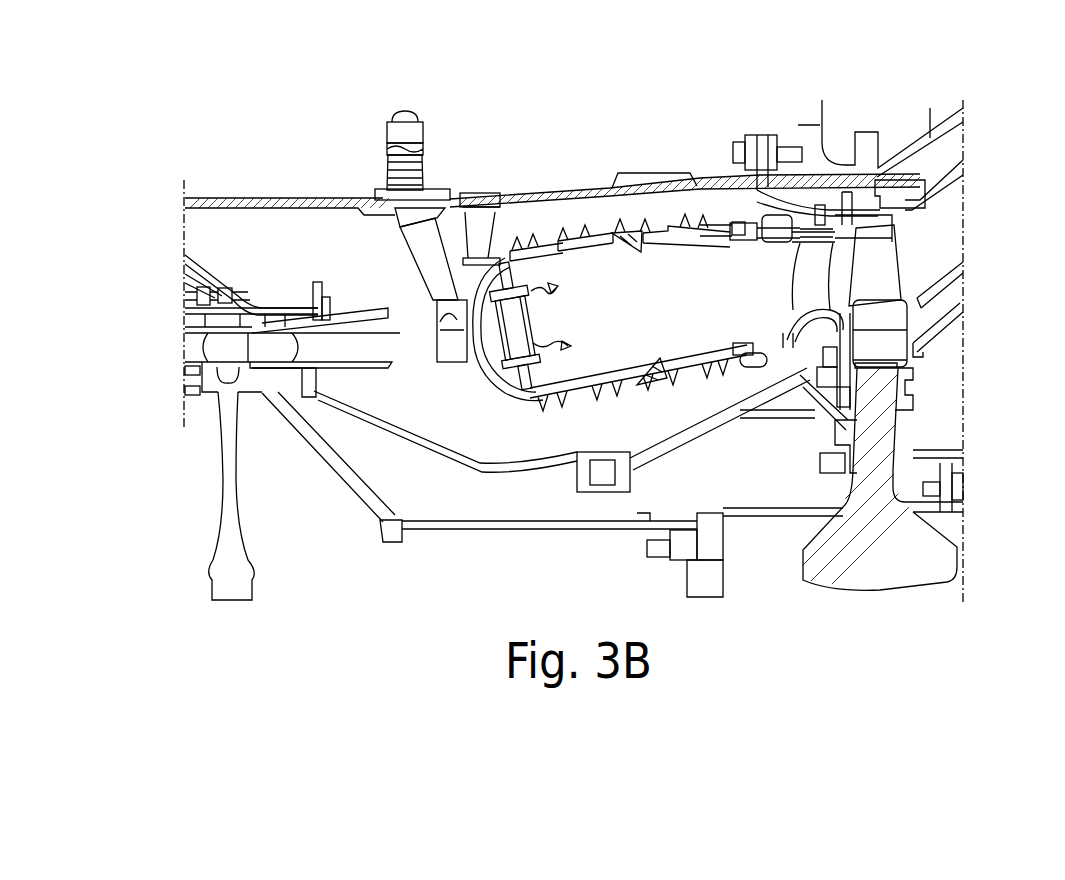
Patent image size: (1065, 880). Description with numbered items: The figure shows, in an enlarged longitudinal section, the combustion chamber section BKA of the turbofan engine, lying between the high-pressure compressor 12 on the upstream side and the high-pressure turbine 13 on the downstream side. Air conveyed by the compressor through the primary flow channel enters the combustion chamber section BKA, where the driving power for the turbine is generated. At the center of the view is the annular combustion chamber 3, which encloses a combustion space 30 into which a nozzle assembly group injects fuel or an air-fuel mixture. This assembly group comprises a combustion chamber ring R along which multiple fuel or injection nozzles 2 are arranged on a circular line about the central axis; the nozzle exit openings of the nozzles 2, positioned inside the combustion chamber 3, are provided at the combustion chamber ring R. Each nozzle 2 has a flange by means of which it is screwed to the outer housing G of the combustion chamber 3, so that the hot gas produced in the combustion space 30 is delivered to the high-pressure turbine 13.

The combustion chamber section BKA is at (470, 108).
The outer housing G is at (317, 198).
The combustion chamber 3 is at (596, 226).
The high-pressure turbine 13 is at (950, 224).
The high-pressure compressor 12 is at (190, 347).
The nozzle 2 is at (434, 362).
The combustion space 30 is at (663, 313).
The combustion chamber ring R is at (530, 368).